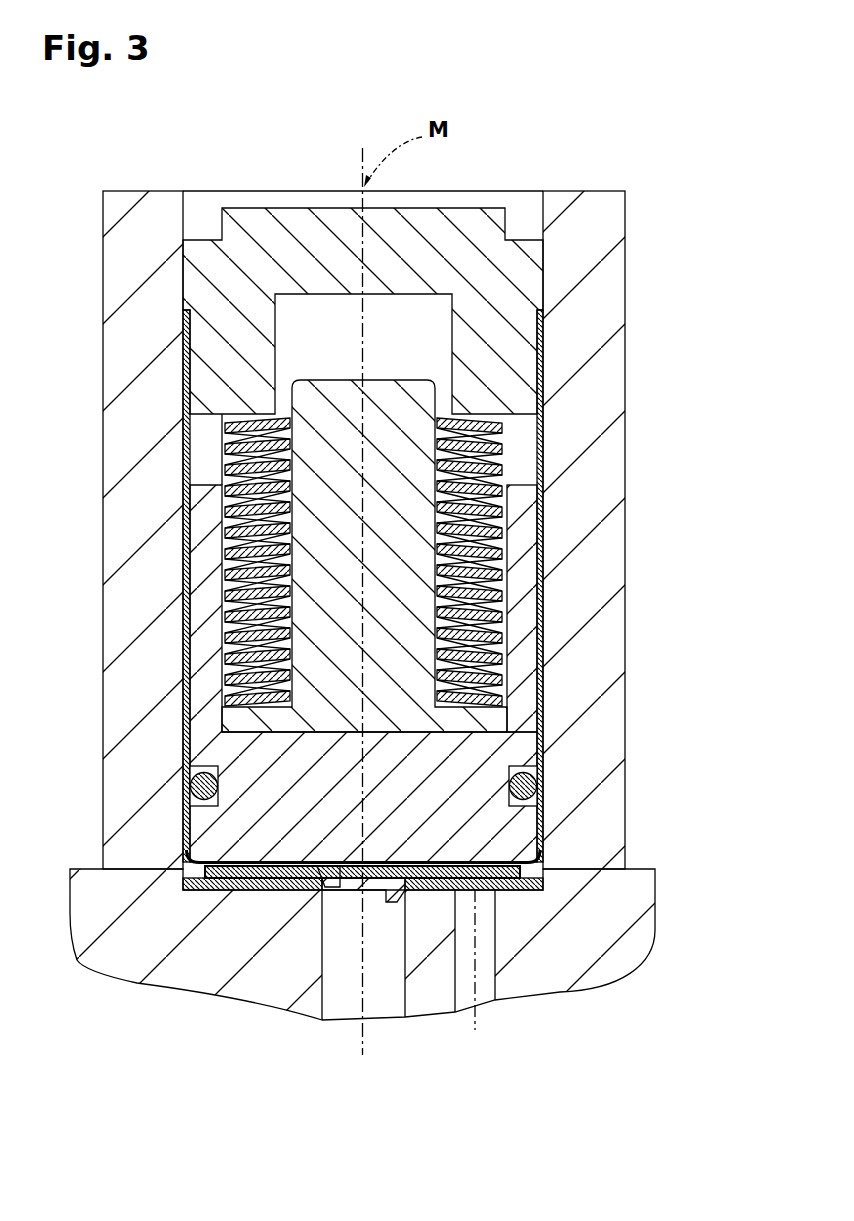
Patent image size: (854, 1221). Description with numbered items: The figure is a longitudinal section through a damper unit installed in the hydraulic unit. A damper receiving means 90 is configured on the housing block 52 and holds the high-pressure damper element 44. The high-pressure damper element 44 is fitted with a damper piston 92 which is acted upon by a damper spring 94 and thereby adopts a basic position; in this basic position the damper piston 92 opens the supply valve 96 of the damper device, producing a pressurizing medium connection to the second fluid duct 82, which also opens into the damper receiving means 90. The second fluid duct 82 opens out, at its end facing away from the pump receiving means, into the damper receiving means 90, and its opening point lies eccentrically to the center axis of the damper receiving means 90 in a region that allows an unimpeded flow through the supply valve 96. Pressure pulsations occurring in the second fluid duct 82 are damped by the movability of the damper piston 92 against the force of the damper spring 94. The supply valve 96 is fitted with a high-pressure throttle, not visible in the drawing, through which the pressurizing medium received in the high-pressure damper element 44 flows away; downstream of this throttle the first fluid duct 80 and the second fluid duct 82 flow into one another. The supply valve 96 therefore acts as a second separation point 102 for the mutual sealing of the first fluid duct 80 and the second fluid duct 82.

The housing block 52 is at (575, 263).
The damper receiving means 90 is at (190, 220).
The damper spring 94 is at (495, 465).
The damper piston 92 is at (518, 593).
The high-pressure damper element 44 is at (200, 682).
The supply valve 96 is at (363, 965).
The second separation point 102 is at (351, 922).
The second fluid duct 82 is at (388, 1003).
The first fluid duct 80 is at (485, 985).